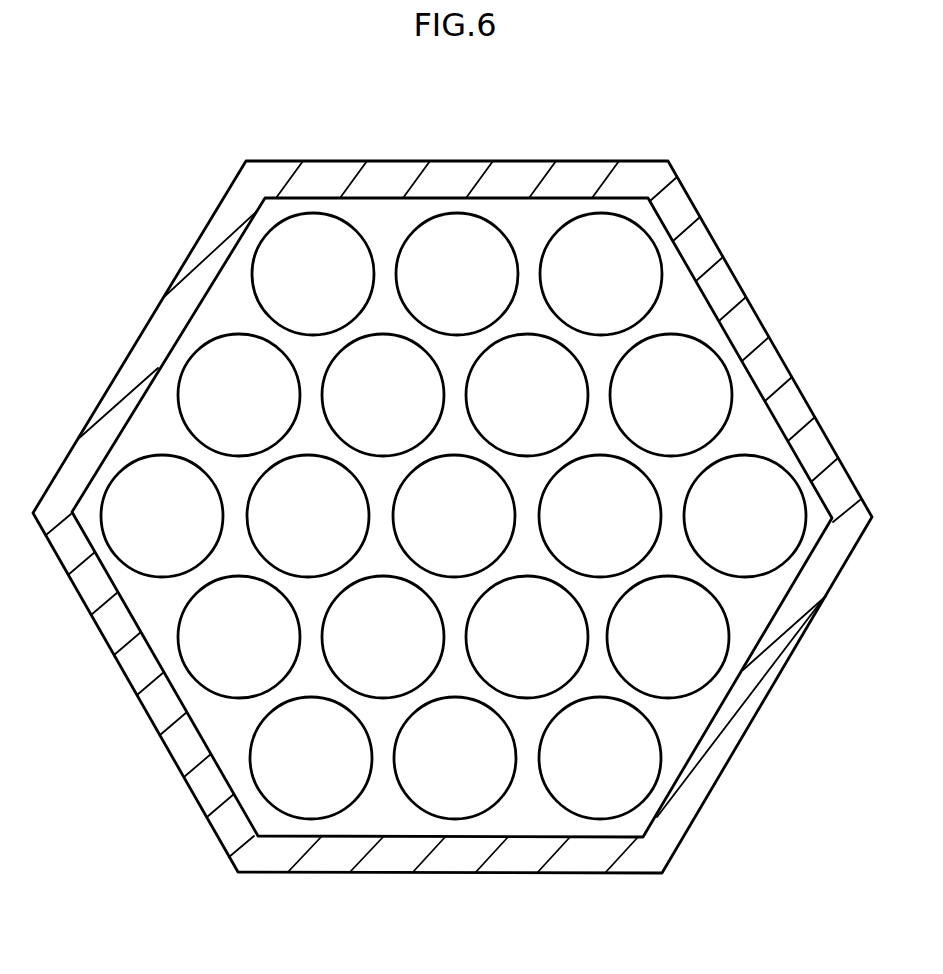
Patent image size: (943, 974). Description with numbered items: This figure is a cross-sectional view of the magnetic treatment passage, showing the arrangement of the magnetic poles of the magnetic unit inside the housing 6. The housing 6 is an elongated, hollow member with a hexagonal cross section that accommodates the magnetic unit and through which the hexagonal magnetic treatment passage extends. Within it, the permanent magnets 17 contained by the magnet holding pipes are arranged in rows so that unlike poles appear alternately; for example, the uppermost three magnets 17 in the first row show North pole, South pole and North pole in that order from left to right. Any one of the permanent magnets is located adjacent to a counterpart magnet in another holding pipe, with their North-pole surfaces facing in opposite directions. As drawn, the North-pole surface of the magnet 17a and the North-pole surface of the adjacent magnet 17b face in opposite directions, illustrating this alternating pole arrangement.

The housing 6 is at (758, 317).
The permanent magnets 17 is at (682, 700).
The magnet 17a is at (320, 232).
The adjacent magnet 17b is at (452, 240).